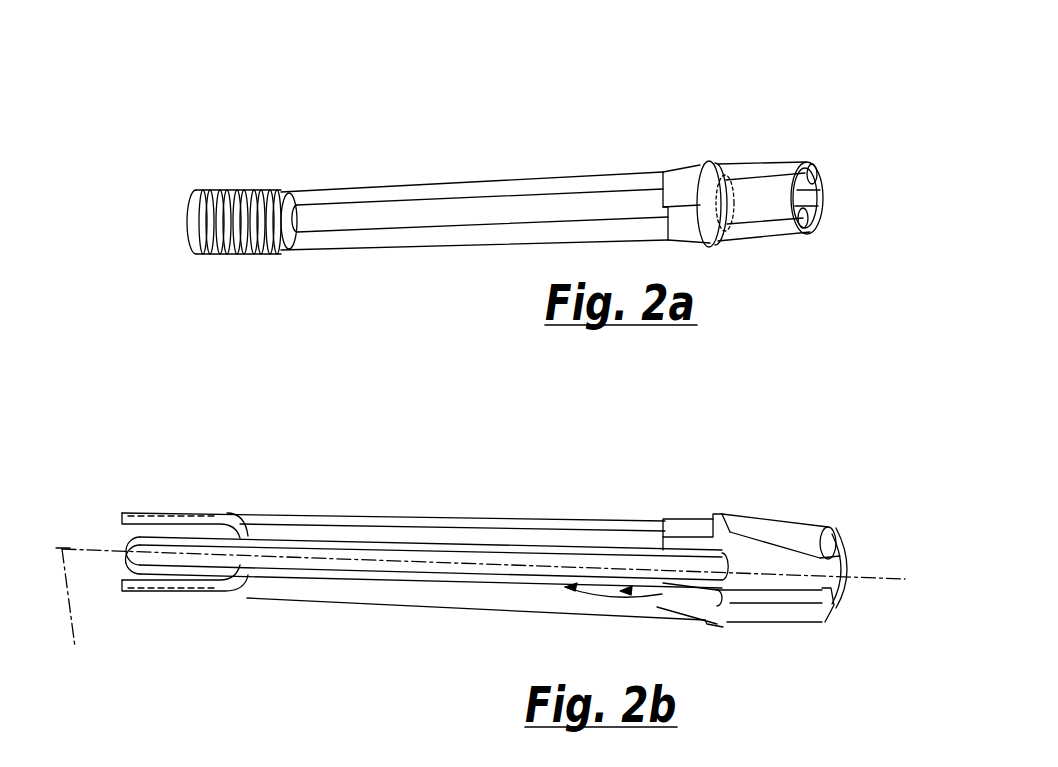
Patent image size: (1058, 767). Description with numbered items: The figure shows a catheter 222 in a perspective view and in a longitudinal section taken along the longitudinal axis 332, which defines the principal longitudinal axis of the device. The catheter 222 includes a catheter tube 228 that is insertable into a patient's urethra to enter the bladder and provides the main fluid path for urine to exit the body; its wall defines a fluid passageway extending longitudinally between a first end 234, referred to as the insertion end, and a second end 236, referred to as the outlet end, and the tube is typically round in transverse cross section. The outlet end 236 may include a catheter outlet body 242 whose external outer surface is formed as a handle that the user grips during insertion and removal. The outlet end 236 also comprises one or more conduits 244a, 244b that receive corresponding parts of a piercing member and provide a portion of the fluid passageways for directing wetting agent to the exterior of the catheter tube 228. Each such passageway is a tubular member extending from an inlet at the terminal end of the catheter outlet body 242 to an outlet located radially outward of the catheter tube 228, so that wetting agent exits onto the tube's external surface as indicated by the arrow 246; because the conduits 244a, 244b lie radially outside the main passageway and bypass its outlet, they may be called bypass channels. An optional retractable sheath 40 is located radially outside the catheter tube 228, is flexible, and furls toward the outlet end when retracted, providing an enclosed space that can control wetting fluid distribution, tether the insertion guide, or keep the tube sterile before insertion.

In FIG. 2A, the catheter 222 is at (331, 150).
In FIG. 2B, the catheter 222 is at (320, 485).
In FIG. 2A, the retractable sheath 40 is at (470, 173).
In FIG. 2B, the retractable sheath 40 is at (450, 527).
In FIG. 2A, the catheter tube 228 is at (470, 212).
In FIG. 2B, the catheter tube 228 is at (473, 578).
In FIG. 2A, the first end 234 is at (200, 290).
In FIG. 2B, the first end 234 is at (180, 617).
In FIG. 2A, the second end 236 is at (755, 275).
In FIG. 2B, the second end 236 is at (730, 655).
In FIG. 2A, the catheter outlet body 242 is at (690, 175).
In FIG. 2B, the catheter outlet body 242 is at (688, 528).
In FIG. 2A, the conduit 244a is at (817, 174).
In FIG. 2B, the conduit 244a is at (832, 543).
In FIG. 2A, the conduit 244b is at (817, 217).
In FIG. 2B, the conduit 244b is at (785, 625).
In FIG. 2B, the arrow 246 is at (853, 608).
In FIG. 2B, the longitudinal axis 332 is at (478, 614).